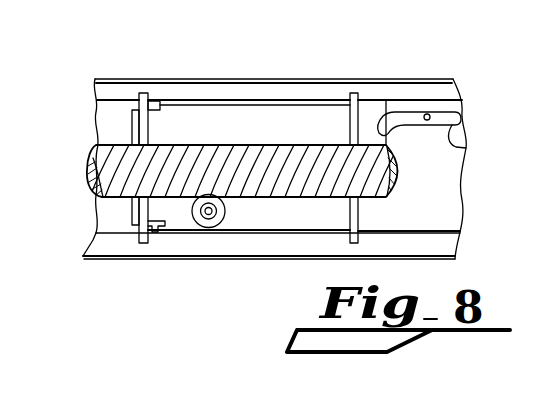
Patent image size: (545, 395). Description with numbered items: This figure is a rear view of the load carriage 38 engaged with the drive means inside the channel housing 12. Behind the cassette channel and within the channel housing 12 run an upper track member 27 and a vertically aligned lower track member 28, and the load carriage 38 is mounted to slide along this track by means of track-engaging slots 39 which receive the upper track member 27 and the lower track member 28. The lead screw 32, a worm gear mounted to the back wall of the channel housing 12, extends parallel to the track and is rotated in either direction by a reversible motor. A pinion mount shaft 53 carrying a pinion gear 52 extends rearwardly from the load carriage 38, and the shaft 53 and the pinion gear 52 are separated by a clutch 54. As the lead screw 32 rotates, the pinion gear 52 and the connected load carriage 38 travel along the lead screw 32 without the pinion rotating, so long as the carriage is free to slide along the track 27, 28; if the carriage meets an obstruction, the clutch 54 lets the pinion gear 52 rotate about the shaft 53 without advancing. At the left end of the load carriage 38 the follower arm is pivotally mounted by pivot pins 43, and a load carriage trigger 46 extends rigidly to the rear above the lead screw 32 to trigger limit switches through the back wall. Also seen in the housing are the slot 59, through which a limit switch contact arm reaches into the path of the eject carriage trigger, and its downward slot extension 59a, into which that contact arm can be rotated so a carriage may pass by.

The channel housing 12 is at (123, 79).
The upper track member 27 is at (112, 87).
The lower track member 28 is at (122, 248).
The lead screw 32 is at (110, 190).
The load carriage 38 is at (258, 120).
The track-engaging slots 39 is at (347, 92).
The pivot pins 43 is at (152, 104).
The load carriage trigger 46 is at (133, 131).
The pinion gear 52 is at (225, 209).
The pinion mount shaft 53 is at (209, 215).
The clutch 54 is at (216, 217).
The slot 59 is at (450, 143).
The slot extension 59a is at (383, 130).